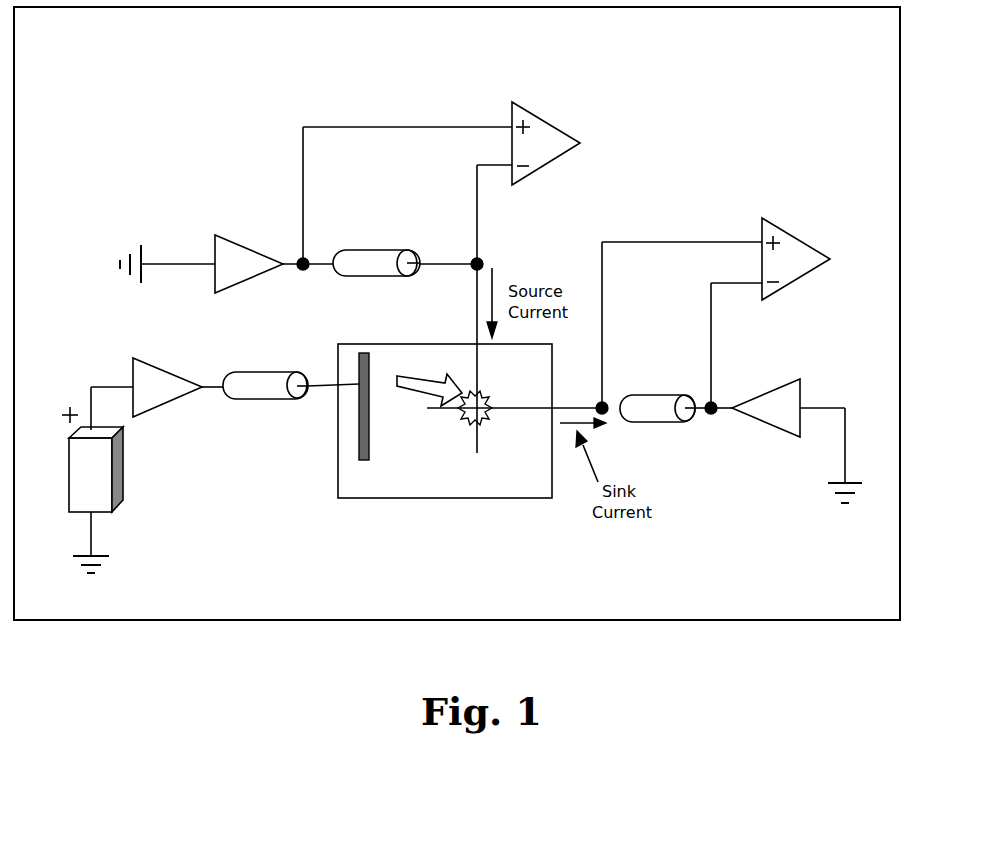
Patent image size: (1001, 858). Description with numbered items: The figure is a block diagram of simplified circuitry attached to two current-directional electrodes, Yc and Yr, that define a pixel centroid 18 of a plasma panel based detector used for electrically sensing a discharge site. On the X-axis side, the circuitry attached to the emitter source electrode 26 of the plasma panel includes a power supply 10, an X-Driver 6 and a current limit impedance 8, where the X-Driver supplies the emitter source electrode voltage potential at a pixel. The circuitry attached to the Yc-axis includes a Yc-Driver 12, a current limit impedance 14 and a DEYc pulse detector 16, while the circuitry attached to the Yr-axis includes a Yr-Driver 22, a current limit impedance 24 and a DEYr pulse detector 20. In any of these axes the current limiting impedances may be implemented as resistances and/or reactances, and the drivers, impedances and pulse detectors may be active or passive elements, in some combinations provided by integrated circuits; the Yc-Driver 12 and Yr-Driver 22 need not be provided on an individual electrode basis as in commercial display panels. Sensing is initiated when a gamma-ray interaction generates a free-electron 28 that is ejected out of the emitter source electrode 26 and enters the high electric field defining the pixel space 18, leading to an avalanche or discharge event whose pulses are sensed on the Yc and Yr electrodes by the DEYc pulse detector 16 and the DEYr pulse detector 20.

The X-Driver 6 is at (128, 370).
The current limit impedance 8 is at (271, 390).
The power supply 10 is at (118, 507).
The Yc-Driver 12 is at (210, 245).
The current limit impedance 14 is at (372, 268).
The DEYc pulse detector 16 is at (575, 131).
The pixel centroid 18 is at (523, 463).
The DEYr pulse detector 20 is at (823, 247).
The Yr-Driver 22 is at (774, 438).
The current limit impedance 24 is at (643, 402).
The emitter source electrode 26 is at (352, 422).
The free-electron 28 is at (385, 383).